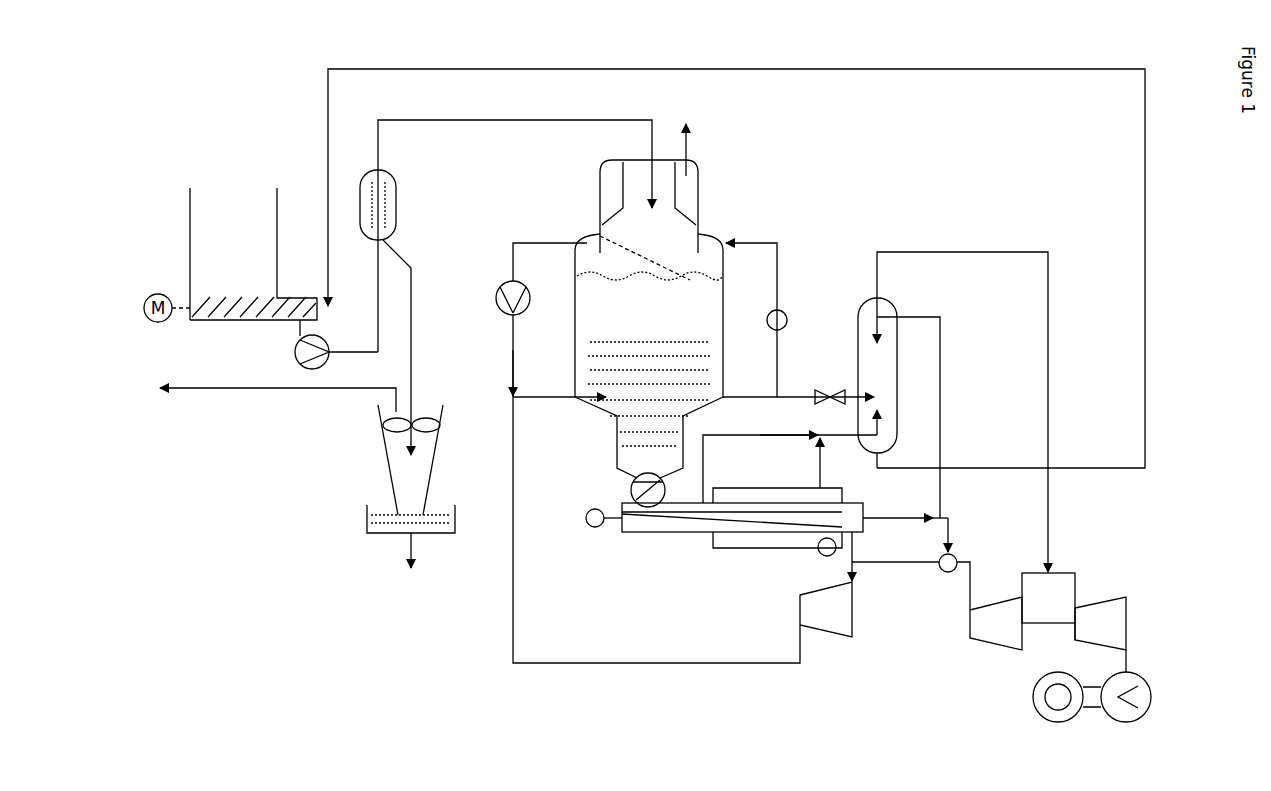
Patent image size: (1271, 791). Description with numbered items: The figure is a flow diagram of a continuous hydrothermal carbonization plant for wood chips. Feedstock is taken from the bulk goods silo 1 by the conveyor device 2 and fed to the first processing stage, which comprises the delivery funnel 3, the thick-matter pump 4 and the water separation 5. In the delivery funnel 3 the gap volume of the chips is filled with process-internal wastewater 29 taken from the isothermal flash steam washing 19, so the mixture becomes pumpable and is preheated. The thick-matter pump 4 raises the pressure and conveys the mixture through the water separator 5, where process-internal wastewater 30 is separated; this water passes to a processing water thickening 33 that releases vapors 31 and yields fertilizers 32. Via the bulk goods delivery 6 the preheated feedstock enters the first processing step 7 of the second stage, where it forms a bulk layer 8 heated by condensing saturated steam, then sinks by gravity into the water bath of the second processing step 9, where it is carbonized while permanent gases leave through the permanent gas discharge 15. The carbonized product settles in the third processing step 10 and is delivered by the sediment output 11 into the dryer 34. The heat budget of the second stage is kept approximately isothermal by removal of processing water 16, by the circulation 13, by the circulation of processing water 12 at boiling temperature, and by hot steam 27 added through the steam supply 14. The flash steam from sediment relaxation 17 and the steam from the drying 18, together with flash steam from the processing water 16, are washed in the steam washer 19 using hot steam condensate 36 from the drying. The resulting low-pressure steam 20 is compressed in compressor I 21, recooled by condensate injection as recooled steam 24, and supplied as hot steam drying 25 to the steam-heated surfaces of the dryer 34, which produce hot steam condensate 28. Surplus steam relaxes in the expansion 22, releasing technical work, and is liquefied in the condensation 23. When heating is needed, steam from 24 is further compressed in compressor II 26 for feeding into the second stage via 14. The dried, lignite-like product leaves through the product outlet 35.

The bulk goods silo 1 is at (257, 240).
The conveyor device 2 is at (224, 325).
The delivery funnel 3 is at (332, 297).
The thick-matter pump 4 is at (295, 352).
The water separation 5 is at (396, 205).
The bulk goods delivery 6 is at (650, 142).
The first processing step of the second processing stage 7 is at (660, 228).
The bulk layer 8 is at (592, 244).
The second processing step of the second processing stage 9 is at (598, 332).
The third processing step 10 is at (630, 440).
The sediment output 11 is at (630, 492).
The circulation of processing water 12 is at (784, 313).
The circulation 13 is at (511, 270).
The steam supply 14 is at (538, 400).
The permanent gas discharge 15 is at (690, 147).
The processing water from the second processing stage 16 is at (795, 392).
The flash steam from sediment relaxation 17 is at (728, 437).
The steam from the drying 18 is at (818, 460).
The isothermal flash steam washing 19 is at (887, 358).
The low-pressure steam before compressor I 20 is at (957, 250).
The compressor I 21 is at (968, 622).
The expansion 22 is at (1131, 623).
The condensation 23 is at (1152, 697).
The recooled steam 24 is at (942, 571).
The hot steam drying 25 is at (855, 540).
The compressor II 26 is at (803, 612).
The hot steam for heating the second processing stage 27 is at (598, 660).
The hot steam condensate from the drying 28 is at (892, 517).
The process-internal wastewater from the steam washing 29 is at (1145, 398).
The process-internal wastewater from the water separation 30 is at (412, 342).
The vapors from thickening 31 is at (220, 396).
The fertilizers 32 is at (365, 520).
The processing water thickening 33 is at (394, 463).
The dryer in steam atmosphere 34 is at (735, 540).
The product outlet 35 is at (818, 552).
The hot steam condensate for the isothermal washing 36 is at (942, 382).